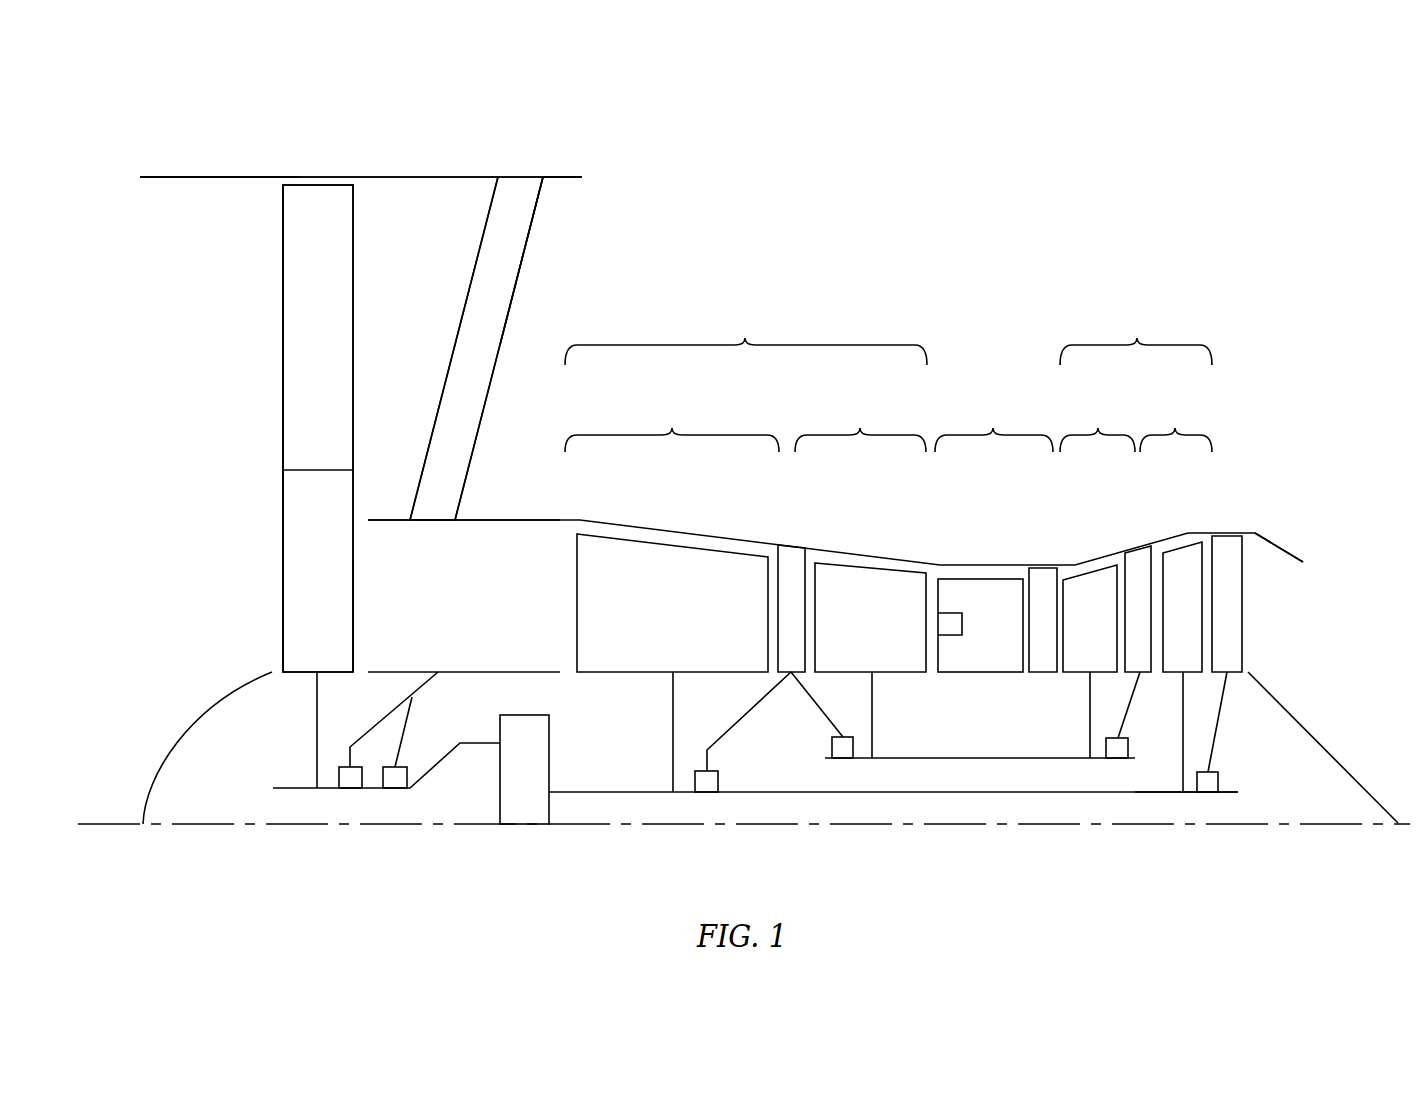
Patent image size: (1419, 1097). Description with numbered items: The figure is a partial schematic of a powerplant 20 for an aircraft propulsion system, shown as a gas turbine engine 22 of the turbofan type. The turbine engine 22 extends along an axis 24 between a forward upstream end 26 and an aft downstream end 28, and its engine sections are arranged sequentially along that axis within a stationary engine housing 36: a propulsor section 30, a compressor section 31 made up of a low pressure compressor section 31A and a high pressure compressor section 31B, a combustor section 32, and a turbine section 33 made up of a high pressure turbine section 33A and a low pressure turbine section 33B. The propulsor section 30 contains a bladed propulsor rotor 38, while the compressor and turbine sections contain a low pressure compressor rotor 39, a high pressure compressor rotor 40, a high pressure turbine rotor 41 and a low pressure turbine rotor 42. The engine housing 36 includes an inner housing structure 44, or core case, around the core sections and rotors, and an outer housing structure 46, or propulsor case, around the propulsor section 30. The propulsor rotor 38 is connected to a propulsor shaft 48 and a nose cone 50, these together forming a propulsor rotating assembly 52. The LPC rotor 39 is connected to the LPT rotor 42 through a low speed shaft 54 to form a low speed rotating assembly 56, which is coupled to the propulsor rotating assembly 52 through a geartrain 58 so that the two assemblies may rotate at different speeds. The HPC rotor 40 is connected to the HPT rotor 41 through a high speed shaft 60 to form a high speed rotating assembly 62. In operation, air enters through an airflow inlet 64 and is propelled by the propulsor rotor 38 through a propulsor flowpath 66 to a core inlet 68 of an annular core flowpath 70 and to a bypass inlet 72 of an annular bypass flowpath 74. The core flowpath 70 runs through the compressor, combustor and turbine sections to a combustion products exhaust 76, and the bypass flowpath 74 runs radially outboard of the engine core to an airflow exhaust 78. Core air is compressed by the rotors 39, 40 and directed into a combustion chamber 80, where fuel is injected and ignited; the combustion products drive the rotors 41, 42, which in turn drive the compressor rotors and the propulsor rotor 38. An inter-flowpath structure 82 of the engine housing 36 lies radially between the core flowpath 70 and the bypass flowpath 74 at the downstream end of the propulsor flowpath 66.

The powerplant 20 is at (327, 117).
The gas turbine engine 22 is at (156, 126).
The axis 24 is at (100, 828).
The forward upstream end 26 is at (140, 177).
The aft downstream end 28 is at (1400, 820).
The propulsor section 30 is at (325, 155).
The compressor section 31 is at (746, 490).
The low pressure compressor section 31A is at (672, 533).
The high pressure compressor section 31B is at (860, 533).
The combustor section 32 is at (994, 533).
The turbine section 33 is at (1135, 490).
The high pressure turbine section 33A is at (1097, 533).
The low pressure turbine section 33B is at (1176, 533).
The engine housing 36 is at (633, 173).
The propulsor rotor 38 is at (306, 638).
The low pressure compressor rotor 39 is at (656, 623).
The high pressure compressor rotor 40 is at (846, 635).
The high pressure turbine rotor 41 is at (1076, 648).
The low pressure turbine rotor 42 is at (1168, 643).
The inner housing structure 44 is at (527, 520).
The outer housing structure 46 is at (523, 177).
The propulsor shaft 48 is at (300, 790).
The nose cone 50 is at (173, 745).
The propulsor rotating assembly 52 is at (259, 776).
The low speed shaft 54 is at (758, 793).
The low speed rotating assembly 56 is at (1256, 799).
The geartrain 58 is at (511, 788).
The high speed shaft 60 is at (930, 758).
The high speed rotating assembly 62 is at (811, 768).
The airflow inlet 64 is at (133, 330).
The propulsor flowpath 66 is at (208, 427).
The core inlet 68 is at (368, 595).
The core flowpath 70 is at (468, 612).
The bypass inlet 72 is at (362, 468).
The bypass flowpath 74 is at (399, 357).
The combustion products exhaust 76 is at (1305, 637).
The airflow exhaust 78 is at (583, 244).
The combustion chamber 80 is at (979, 642).
The inter-flowpath structure 82 is at (392, 500).